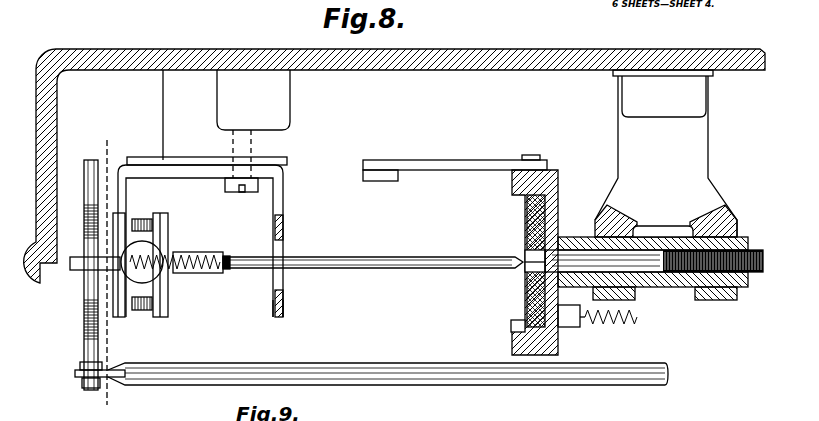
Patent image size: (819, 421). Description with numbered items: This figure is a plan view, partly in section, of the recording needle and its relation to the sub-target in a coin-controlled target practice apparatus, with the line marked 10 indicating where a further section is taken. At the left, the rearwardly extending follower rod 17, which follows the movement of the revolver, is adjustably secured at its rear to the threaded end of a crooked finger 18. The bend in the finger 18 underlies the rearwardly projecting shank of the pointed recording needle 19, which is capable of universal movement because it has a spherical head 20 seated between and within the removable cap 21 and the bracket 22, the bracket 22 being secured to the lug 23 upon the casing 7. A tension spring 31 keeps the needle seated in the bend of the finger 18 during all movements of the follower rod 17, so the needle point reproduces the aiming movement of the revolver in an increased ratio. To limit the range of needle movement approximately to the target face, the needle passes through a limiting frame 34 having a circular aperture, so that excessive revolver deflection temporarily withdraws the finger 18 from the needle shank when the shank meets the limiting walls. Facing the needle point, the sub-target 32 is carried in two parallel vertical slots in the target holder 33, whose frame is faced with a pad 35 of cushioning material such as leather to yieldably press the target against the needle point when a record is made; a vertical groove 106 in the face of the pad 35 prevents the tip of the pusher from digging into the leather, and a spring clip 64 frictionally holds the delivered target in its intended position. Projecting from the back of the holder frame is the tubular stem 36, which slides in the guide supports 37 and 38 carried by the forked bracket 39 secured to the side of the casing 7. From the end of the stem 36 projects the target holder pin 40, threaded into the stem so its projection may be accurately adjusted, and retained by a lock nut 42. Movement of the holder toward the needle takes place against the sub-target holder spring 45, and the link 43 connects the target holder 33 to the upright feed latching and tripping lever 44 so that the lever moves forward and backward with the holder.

The casing 7 is at (485, 66).
The section line 10— 10 is at (106, 275).
The follower rod 17 is at (360, 361).
The crooked finger 18 is at (84, 326).
The recording needle 19 is at (365, 252).
The spherical head 20 is at (145, 250).
The removable cap 21 is at (160, 282).
The bracket 22 is at (126, 199).
The lug 23 is at (205, 106).
The tension spring 31 is at (205, 260).
The sub-target 32 is at (527, 241).
The target holder 33 is at (558, 190).
The limiting frame 34 is at (283, 300).
The pad 35 is at (527, 226).
The tubular stem 36 is at (661, 236).
The guide support 37 is at (626, 295).
The guide support 38 is at (722, 300).
The forked bracket 39 is at (697, 127).
The target holder pin 40 is at (588, 252).
The lock nut 42 is at (740, 240).
The link 43 is at (487, 160).
The feed latching and tripping lever 44 is at (396, 172).
The sub-target holder spring 45 is at (615, 325).
The spring clip 64 is at (511, 328).
The vertical groove 106 is at (527, 270).